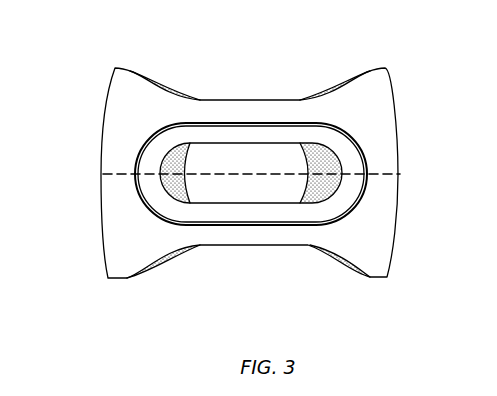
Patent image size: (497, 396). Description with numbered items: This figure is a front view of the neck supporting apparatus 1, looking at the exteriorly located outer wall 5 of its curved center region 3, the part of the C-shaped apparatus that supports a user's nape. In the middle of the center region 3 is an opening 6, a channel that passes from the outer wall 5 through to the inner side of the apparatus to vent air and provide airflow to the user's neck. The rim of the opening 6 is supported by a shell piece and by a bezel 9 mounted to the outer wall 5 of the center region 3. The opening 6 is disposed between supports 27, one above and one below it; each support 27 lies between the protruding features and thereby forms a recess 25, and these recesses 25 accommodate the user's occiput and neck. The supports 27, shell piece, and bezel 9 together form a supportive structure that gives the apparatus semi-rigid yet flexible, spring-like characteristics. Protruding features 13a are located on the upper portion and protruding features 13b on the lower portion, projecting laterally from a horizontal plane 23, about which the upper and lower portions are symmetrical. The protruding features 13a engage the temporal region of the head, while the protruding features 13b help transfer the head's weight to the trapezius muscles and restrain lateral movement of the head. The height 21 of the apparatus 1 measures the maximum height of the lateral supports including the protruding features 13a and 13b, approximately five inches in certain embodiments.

The supporting apparatus 1 is at (467, 49).
The center region 3 is at (213, 62).
The outer wall 5 is at (396, 226).
The opening 6 is at (331, 150).
The bezel 9 is at (361, 158).
The protruding features 13a is at (137, 73).
The protruding features 13b is at (138, 272).
The height 21 is at (83, 280).
The horizontal plane 23 is at (398, 174).
The recess 25 is at (282, 82).
The supports 27 is at (251, 112).